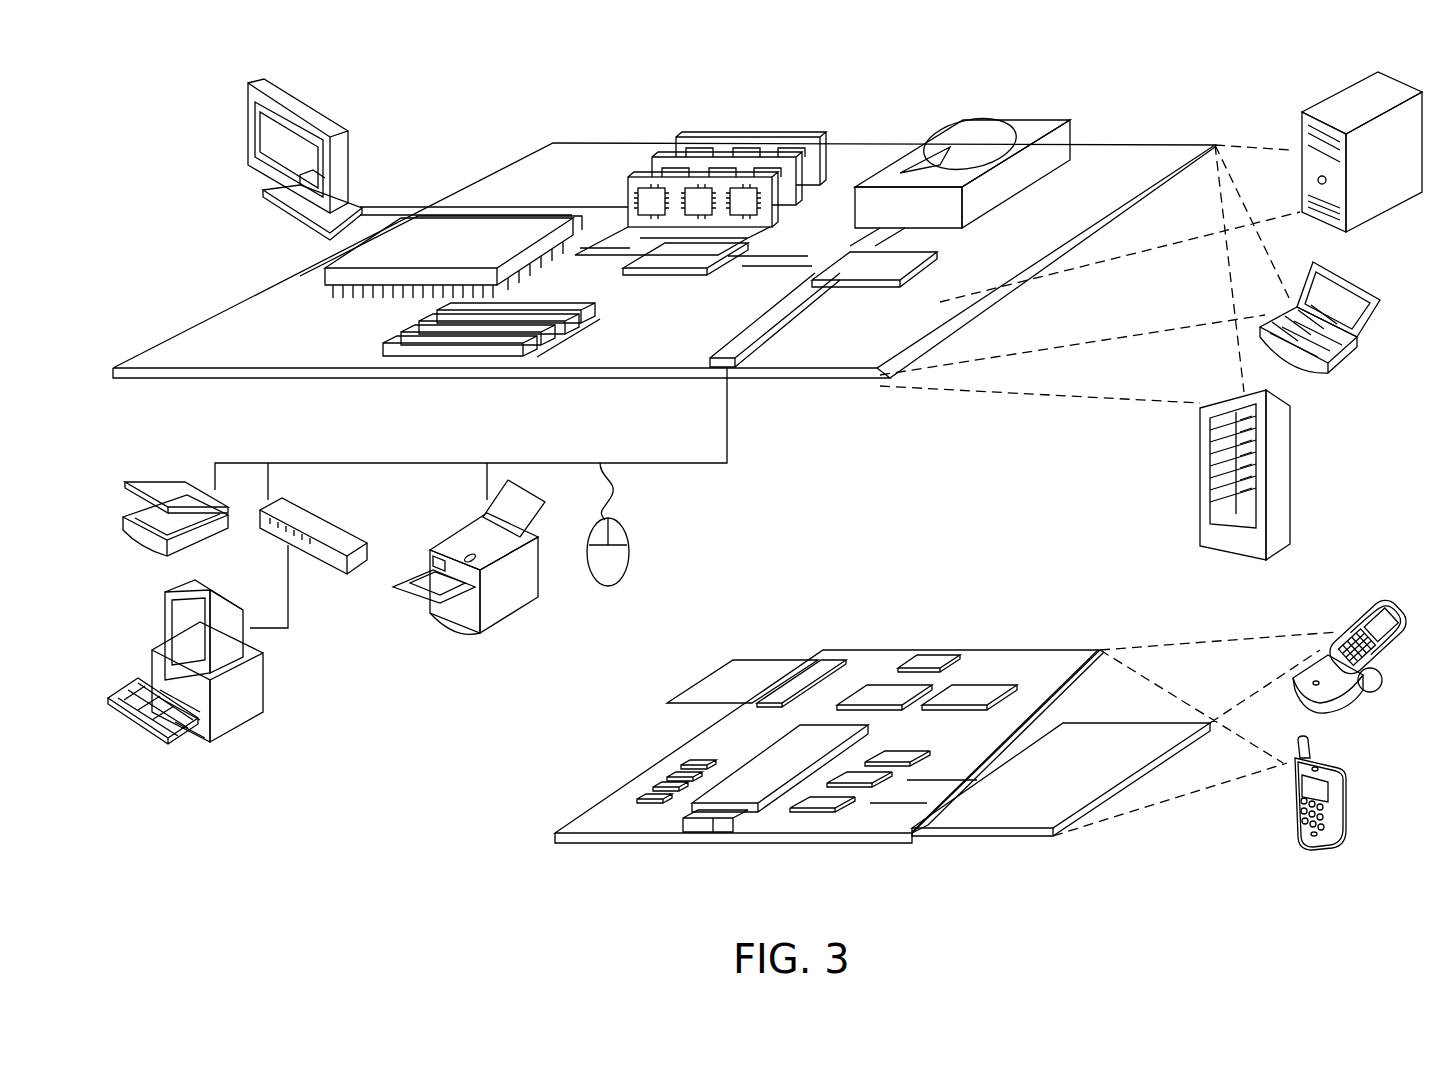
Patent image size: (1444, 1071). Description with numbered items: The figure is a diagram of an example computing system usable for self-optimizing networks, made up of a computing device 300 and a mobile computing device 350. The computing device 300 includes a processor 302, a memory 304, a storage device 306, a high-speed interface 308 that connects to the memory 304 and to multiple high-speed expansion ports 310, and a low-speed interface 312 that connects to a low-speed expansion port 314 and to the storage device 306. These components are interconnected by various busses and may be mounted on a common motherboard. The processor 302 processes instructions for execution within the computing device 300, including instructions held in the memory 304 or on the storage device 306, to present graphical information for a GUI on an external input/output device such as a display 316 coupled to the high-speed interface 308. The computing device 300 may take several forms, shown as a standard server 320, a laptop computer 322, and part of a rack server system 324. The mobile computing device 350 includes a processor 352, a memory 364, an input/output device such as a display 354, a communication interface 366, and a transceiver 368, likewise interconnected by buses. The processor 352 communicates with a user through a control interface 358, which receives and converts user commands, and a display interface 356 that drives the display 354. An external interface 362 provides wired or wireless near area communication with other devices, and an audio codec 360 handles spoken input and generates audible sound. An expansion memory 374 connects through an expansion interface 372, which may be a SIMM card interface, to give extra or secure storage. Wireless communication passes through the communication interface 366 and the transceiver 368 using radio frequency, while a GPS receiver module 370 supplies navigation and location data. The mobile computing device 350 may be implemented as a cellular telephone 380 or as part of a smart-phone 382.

The computing device 300 is at (184, 106).
The processor 302 is at (323, 273).
The memory 304 is at (689, 137).
The storage device 306 is at (960, 121).
The high-speed interface 308 is at (660, 257).
The high-speed expansion ports 310 is at (392, 340).
The low-speed interface 312 is at (853, 262).
The low-speed expansion port 314 is at (737, 370).
The display 316 is at (312, 103).
The standard server 320 is at (1302, 126).
The laptop computer 322 is at (1330, 364).
The rack server system 324 is at (1202, 504).
The mobile computing device 350 is at (526, 802).
The processor 352 is at (755, 790).
The display 354 is at (1012, 812).
The display interface 356 is at (827, 803).
The control interface 358 is at (863, 780).
The audio codec 360 is at (893, 752).
The external interface 362 is at (714, 832).
The memory 364 is at (660, 784).
The communication interface 366 is at (881, 686).
The transceiver 368 is at (973, 692).
The GPS receiver module 370 is at (940, 653).
The expansion interface 372 is at (788, 670).
The expansion memory 374 is at (727, 667).
The cellular telephone 380 is at (1353, 599).
The smart-phone 382 is at (1292, 798).